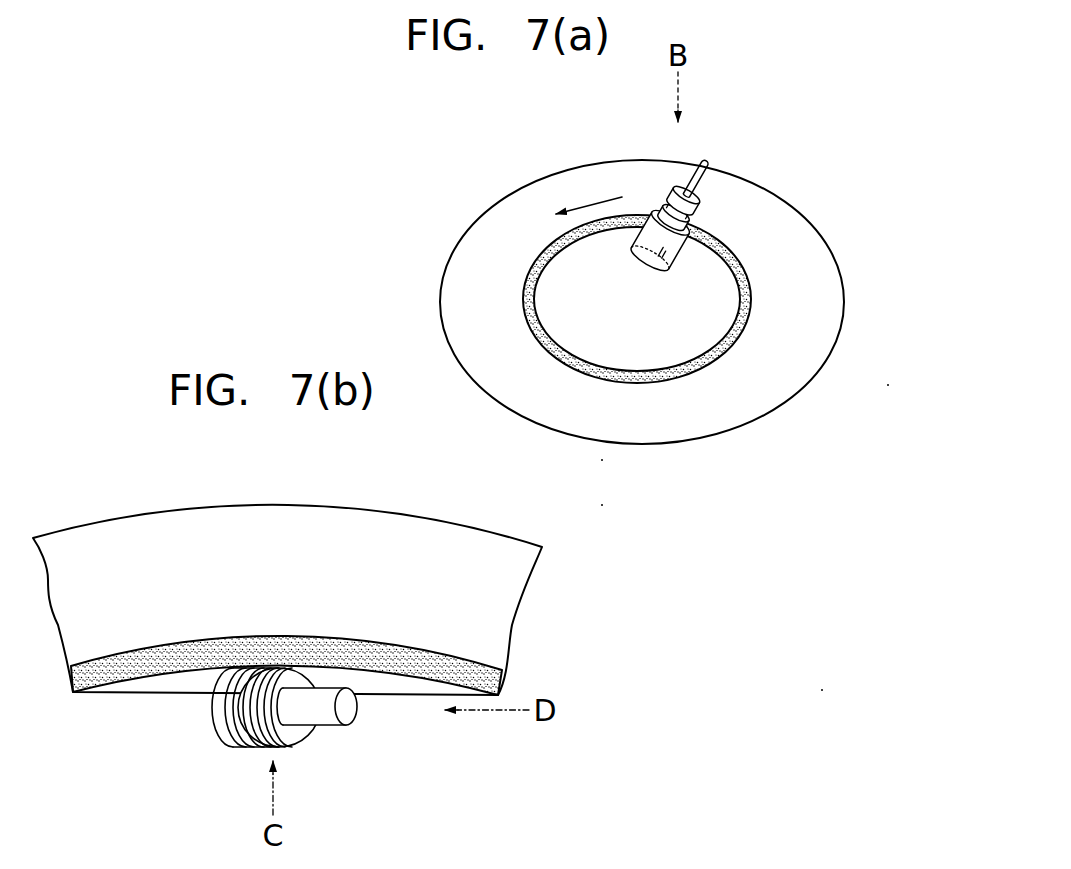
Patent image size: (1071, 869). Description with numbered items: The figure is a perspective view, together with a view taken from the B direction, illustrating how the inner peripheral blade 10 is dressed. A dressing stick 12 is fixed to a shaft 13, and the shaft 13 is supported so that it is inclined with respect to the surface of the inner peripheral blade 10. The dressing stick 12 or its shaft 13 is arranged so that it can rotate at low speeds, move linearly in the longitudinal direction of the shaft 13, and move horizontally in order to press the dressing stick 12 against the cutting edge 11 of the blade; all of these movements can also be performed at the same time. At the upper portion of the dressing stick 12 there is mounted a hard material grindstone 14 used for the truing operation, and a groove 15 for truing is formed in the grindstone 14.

In FIG. 7a, the inner peripheral blade 10 is at (777, 370).
In FIG. 7b, the inner peripheral blade 10 is at (341, 556).
In FIG. 7a, the cutting edge 11 is at (737, 255).
In FIG. 7b, the cutting edge 11 is at (192, 670).
In FIG. 7a, the dressing stick 12 is at (658, 266).
In FIG. 7a, the shaft 13 is at (704, 163).
In FIG. 7b, the shaft 13 is at (340, 710).
In FIG. 7a, the hard material grindstone 14 is at (689, 217).
In FIG. 7a, the groove 15 is at (668, 202).